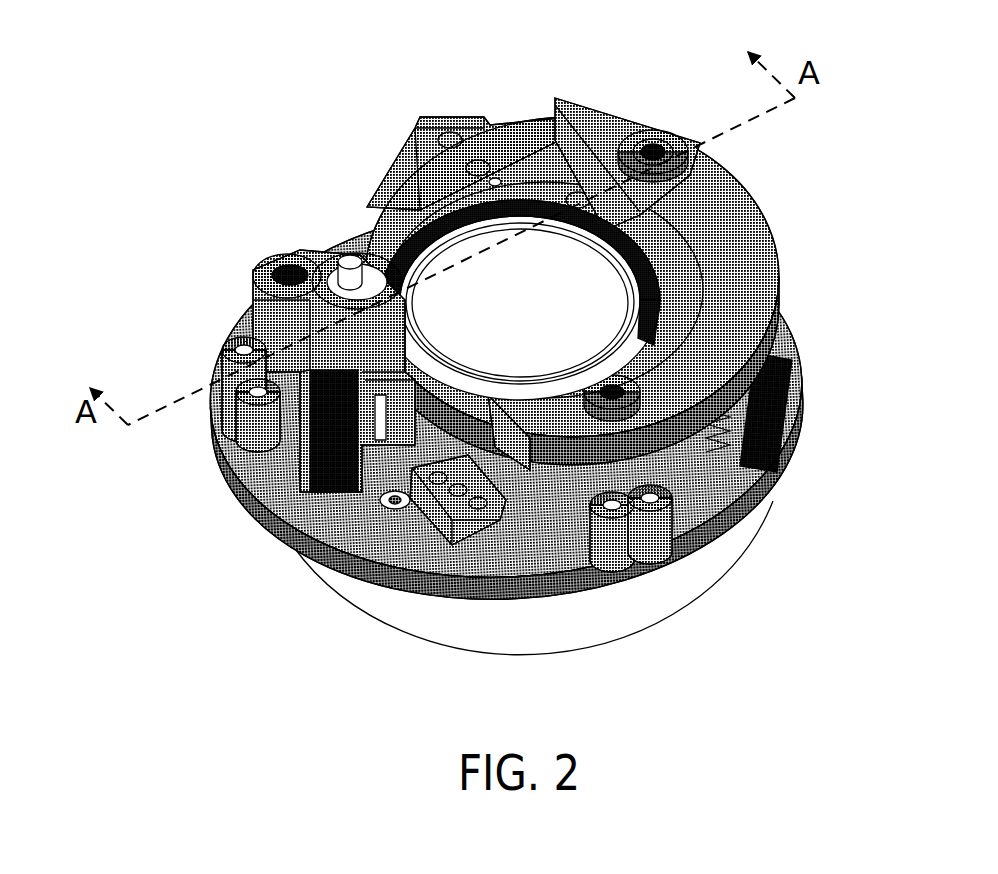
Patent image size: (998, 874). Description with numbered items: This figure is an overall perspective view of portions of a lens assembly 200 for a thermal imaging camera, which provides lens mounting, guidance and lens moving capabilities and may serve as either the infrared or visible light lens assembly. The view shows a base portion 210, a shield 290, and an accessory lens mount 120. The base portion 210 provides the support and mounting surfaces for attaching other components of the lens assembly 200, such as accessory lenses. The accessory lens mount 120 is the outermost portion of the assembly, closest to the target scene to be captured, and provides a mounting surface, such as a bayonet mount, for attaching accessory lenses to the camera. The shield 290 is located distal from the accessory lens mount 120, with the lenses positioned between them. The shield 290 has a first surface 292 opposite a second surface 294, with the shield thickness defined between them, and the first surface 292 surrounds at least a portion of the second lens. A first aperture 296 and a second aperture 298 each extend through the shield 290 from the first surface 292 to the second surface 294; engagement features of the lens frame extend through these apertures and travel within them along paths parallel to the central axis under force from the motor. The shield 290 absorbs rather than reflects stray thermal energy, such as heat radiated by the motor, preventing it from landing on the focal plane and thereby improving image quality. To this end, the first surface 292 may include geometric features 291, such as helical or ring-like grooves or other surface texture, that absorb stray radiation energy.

The lens assembly 200 is at (290, 103).
The accessory lens mount 120 is at (667, 583).
The base portion 210 is at (792, 397).
The shield 290 is at (610, 115).
The geometric features 291 is at (530, 214).
The first surface 292 is at (498, 213).
The second surface 294 is at (792, 287).
The first aperture 296 is at (632, 262).
The second aperture 298 is at (410, 355).